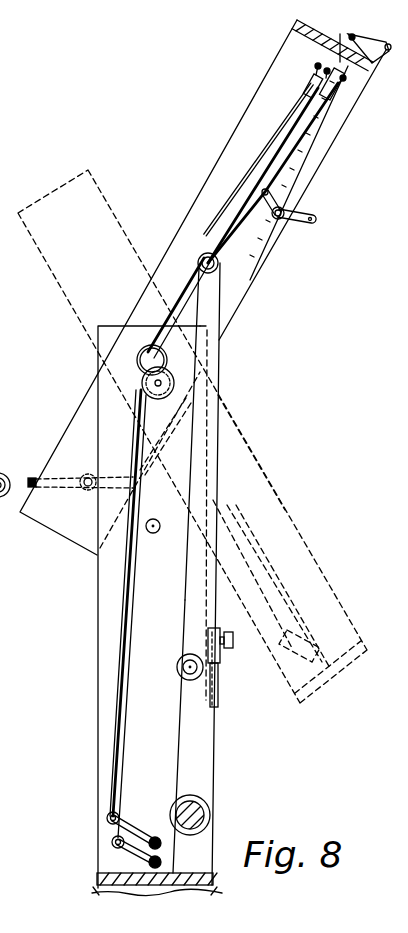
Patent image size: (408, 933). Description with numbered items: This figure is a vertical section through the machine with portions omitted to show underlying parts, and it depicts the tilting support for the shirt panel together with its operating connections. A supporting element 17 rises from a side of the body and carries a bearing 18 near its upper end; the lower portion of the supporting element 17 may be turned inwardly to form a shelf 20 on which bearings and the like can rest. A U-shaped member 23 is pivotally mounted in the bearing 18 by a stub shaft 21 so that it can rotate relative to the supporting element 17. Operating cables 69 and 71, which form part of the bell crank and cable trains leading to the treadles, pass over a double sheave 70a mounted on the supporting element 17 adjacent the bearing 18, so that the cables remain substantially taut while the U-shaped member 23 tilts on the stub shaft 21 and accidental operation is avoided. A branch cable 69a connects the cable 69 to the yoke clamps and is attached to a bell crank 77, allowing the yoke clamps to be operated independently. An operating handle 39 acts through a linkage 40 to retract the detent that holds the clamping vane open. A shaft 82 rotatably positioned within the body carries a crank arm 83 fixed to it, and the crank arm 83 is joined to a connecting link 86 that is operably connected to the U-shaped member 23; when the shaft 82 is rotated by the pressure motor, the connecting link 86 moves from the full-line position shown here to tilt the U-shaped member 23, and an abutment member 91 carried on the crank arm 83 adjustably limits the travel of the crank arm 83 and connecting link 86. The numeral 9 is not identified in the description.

The roller 9 is at (5, 471).
The supporting element 17 is at (99, 657).
The bearing 18 is at (138, 360).
The shelf 20 is at (187, 884).
The stub shaft 21 is at (148, 355).
The U-shaped member 23 is at (222, 159).
The operating handle 39 is at (33, 478).
The linkage 40 is at (373, 36).
The cable 69 is at (308, 122).
The branch cable 69a is at (296, 158).
The double sheave 70a is at (142, 392).
The cable 71 is at (273, 152).
The bell crank 77 is at (310, 214).
The shaft 82 is at (171, 813).
The crank arm 83 is at (183, 746).
The connecting link 86 is at (188, 622).
The abutment member 91 is at (217, 668).